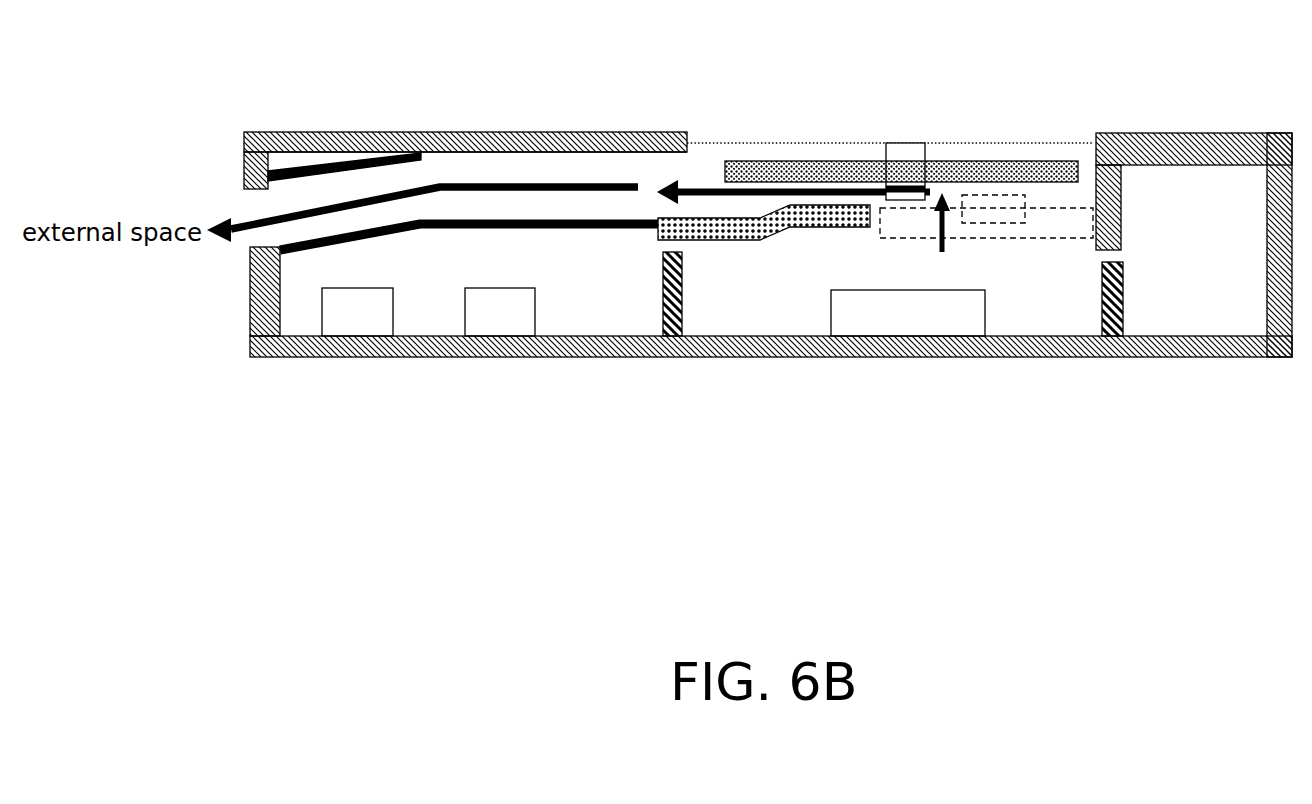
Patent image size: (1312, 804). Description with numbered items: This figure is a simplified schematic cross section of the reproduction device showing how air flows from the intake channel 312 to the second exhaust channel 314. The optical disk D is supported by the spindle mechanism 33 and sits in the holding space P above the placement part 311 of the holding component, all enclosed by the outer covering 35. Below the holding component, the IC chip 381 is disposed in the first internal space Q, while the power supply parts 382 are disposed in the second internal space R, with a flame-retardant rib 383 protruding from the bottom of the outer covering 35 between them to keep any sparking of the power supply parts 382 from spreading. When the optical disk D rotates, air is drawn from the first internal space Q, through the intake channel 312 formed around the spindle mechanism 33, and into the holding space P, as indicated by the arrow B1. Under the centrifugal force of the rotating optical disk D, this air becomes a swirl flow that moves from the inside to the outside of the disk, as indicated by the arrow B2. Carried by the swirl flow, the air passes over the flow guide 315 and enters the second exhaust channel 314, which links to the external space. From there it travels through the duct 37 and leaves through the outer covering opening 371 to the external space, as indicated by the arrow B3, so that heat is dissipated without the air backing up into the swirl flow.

The second exhaust channel 314 is at (674, 158).
The flow guide 315 is at (730, 217).
The placement part 311 is at (835, 202).
The spindle mechanism 33 is at (905, 158).
The intake channel 312 is at (958, 174).
The outer covering 35 is at (1177, 143).
The outer covering opening 371 is at (236, 200).
The duct 37 is at (487, 232).
The power supply parts 382 is at (490, 298).
The rib 383 is at (687, 300).
The IC chip 381 is at (870, 310).
The optical disk D is at (1030, 170).
The holding space P is at (1076, 188).
The first internal space Q is at (1038, 302).
The second internal space R is at (610, 322).
The arrow B1 is at (945, 233).
The arrow B2 is at (790, 197).
The arrow B3 is at (490, 188).